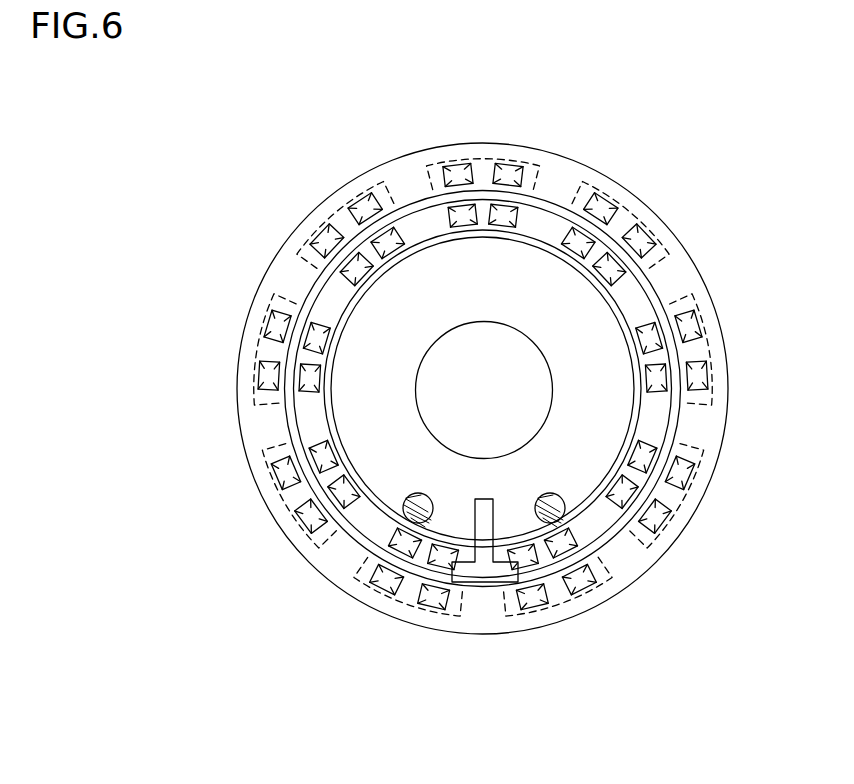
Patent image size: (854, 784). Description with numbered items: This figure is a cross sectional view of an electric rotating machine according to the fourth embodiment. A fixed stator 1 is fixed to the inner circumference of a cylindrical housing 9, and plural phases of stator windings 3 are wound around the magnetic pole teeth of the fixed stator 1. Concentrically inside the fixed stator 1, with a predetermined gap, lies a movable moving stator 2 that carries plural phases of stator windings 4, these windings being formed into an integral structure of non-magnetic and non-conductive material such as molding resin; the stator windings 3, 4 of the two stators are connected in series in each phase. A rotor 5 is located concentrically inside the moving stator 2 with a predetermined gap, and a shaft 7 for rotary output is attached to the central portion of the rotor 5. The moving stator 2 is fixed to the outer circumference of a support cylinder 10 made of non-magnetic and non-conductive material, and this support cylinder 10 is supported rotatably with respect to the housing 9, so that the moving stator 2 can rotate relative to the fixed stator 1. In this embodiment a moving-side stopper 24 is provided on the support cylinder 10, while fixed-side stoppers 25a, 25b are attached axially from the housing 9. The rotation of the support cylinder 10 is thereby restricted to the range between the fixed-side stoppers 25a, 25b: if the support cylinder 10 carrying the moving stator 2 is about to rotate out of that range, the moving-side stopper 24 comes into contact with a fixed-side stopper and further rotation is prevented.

The fixed stator 1 is at (547, 180).
The moving stator 2 is at (312, 298).
The stator windings 3 is at (648, 247).
The stator windings 4 is at (445, 215).
The rotor 5 is at (608, 324).
The shaft 7 is at (533, 382).
The housing 9 is at (435, 148).
The support cylinder 10 is at (540, 218).
The moving-side stopper 24 is at (480, 520).
The fixed-side stopper 25a is at (567, 508).
The fixed-side stopper 25b is at (400, 512).